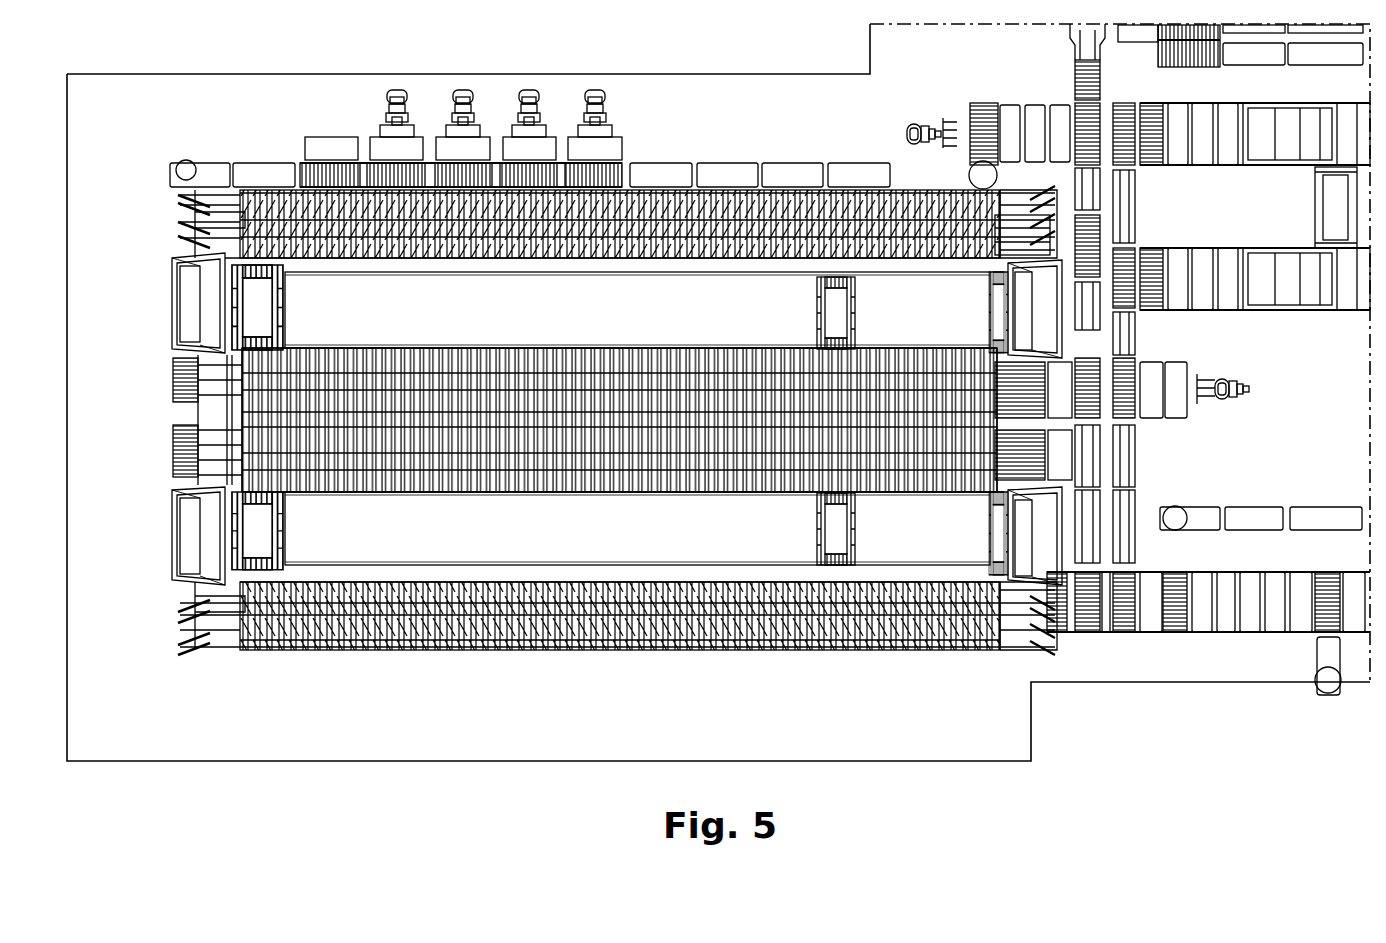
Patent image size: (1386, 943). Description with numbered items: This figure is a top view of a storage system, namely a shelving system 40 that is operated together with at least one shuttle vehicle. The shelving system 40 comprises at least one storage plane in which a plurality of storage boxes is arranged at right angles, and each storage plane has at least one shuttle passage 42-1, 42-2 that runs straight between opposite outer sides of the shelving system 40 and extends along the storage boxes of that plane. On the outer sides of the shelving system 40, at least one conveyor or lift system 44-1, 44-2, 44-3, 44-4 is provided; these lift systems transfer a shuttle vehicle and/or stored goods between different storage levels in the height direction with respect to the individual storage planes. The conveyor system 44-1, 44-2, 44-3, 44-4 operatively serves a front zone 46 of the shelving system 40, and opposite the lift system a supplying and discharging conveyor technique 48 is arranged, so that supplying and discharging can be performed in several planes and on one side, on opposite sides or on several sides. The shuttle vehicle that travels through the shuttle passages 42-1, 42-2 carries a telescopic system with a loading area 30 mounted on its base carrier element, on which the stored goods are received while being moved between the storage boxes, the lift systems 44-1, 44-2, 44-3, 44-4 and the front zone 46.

The loading area 30 is at (305, 148).
The shelving system 40 is at (740, 119).
The shuttle passage 42-1 is at (262, 542).
The shuttle passage 42-2 is at (832, 293).
The conveyor or lift system 44-1 is at (172, 305).
The conveyor or lift system 44-2 is at (1062, 317).
The conveyor or lift system 44-3 is at (172, 510).
The conveyor or lift system 44-4 is at (1045, 590).
The front zone 46 is at (1340, 456).
The supplying and discharging conveyor technique 48 is at (1045, 105).